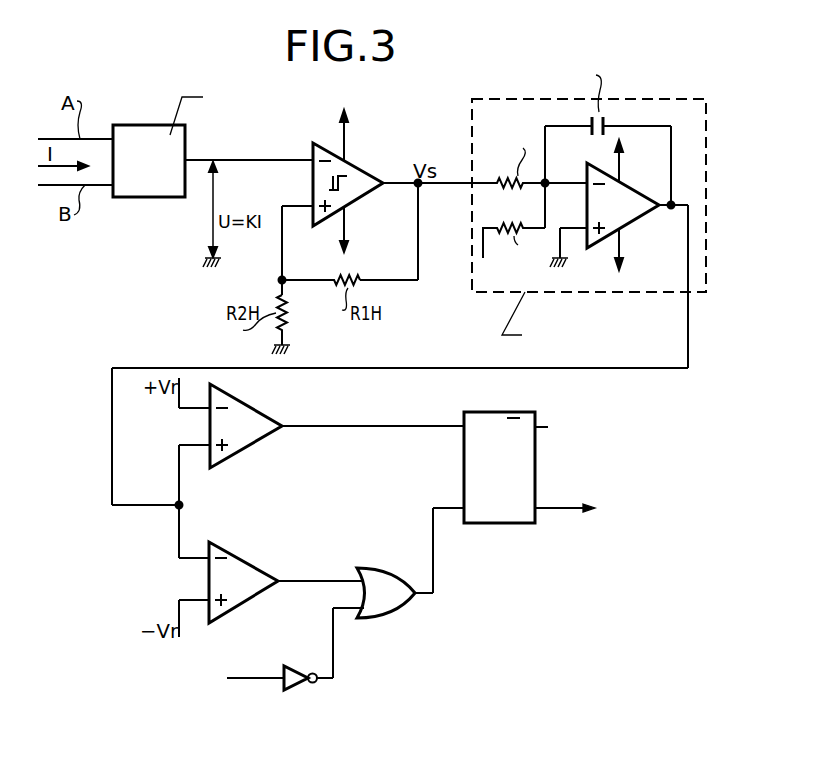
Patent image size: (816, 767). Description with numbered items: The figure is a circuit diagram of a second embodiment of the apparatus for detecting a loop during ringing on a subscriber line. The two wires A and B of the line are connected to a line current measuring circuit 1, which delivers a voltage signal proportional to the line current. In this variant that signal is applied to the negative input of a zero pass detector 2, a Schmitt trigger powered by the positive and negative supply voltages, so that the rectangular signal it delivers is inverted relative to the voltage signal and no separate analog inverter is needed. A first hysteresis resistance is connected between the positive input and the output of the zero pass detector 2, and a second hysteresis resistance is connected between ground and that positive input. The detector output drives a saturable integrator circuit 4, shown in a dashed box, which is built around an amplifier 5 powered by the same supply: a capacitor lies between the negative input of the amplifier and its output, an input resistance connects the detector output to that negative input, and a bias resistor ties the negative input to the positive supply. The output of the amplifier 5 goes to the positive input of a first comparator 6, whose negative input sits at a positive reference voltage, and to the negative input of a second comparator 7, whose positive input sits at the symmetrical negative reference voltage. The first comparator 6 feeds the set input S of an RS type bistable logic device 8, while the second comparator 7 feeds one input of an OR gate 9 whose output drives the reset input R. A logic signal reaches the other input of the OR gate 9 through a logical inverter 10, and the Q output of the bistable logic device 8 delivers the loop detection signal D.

The line current measuring circuit 1 is at (159, 142).
The zero pass detector 2 is at (362, 183).
The saturable integrator circuit 4 is at (648, 108).
The amplifier 5 is at (622, 203).
The first comparator 6 is at (337, 433).
The second comparator 7 is at (248, 578).
The RS type bistable logic device 8 is at (483, 472).
The OR gate 9 is at (387, 585).
The logical inverter 10 is at (292, 668).